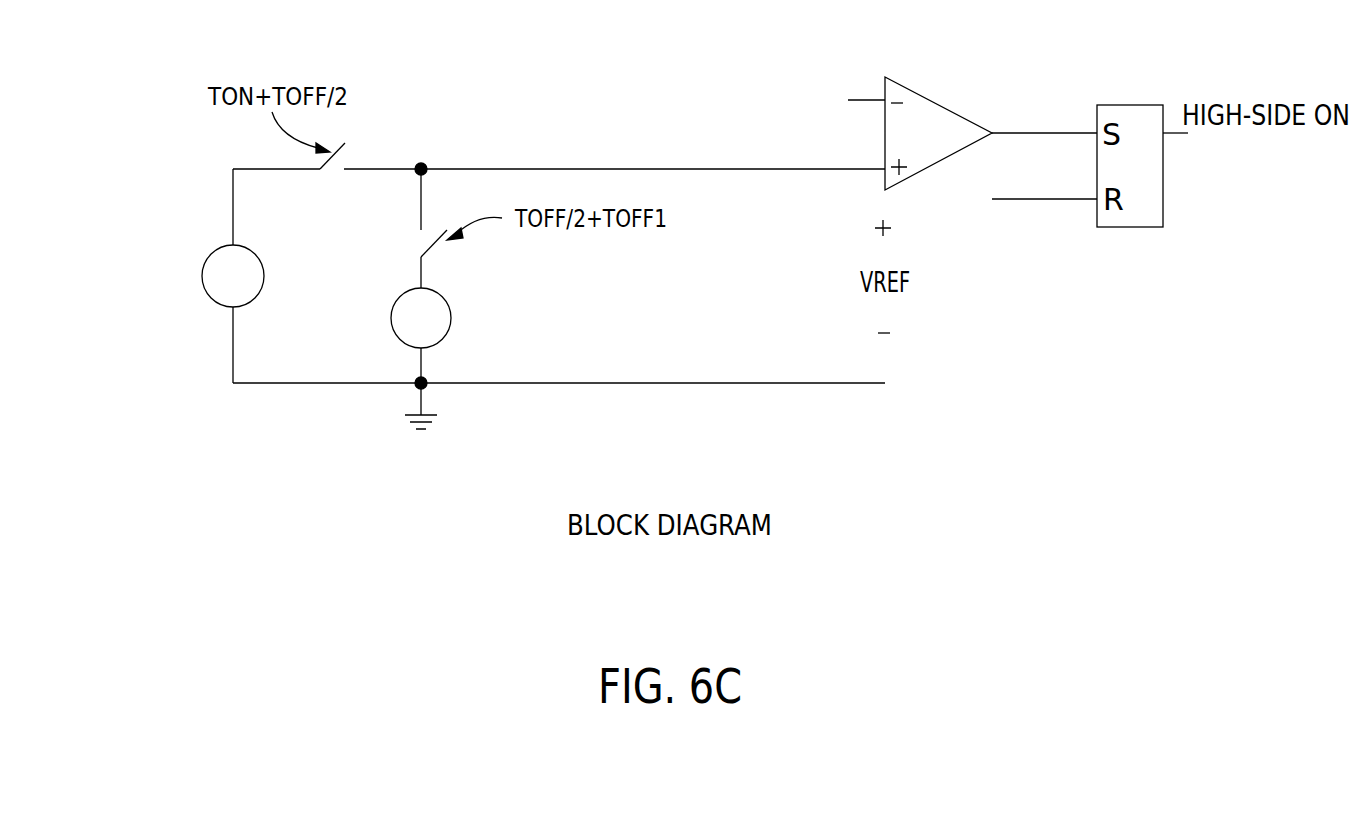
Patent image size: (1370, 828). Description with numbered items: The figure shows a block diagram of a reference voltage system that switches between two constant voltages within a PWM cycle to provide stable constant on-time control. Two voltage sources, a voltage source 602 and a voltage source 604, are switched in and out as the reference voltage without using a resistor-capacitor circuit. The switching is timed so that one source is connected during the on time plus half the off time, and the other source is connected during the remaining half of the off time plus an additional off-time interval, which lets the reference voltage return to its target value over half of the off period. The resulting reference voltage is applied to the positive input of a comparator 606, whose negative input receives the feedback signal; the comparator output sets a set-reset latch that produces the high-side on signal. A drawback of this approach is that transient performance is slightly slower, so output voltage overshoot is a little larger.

The voltage source 602 is at (222, 249).
The voltage source 604 is at (390, 311).
The comparator (COMP) 606 is at (904, 133).